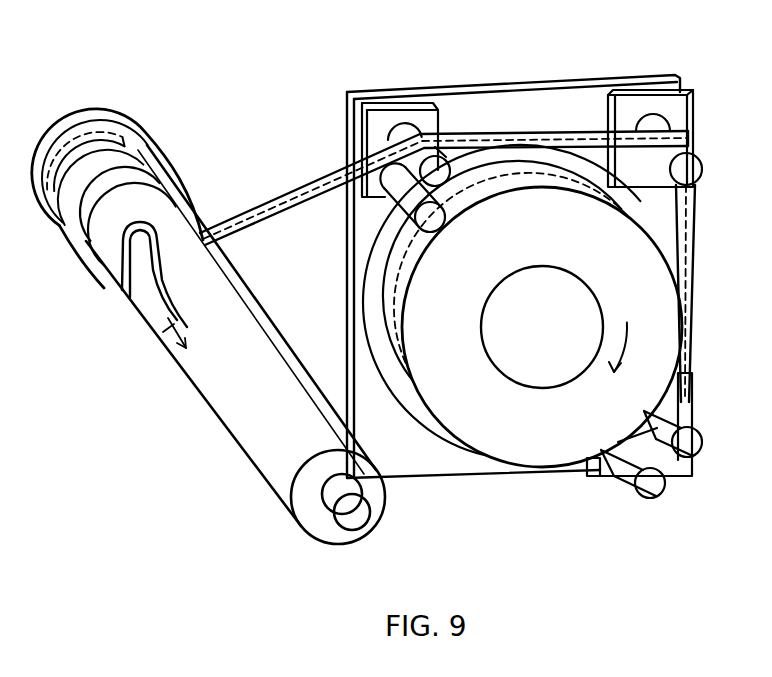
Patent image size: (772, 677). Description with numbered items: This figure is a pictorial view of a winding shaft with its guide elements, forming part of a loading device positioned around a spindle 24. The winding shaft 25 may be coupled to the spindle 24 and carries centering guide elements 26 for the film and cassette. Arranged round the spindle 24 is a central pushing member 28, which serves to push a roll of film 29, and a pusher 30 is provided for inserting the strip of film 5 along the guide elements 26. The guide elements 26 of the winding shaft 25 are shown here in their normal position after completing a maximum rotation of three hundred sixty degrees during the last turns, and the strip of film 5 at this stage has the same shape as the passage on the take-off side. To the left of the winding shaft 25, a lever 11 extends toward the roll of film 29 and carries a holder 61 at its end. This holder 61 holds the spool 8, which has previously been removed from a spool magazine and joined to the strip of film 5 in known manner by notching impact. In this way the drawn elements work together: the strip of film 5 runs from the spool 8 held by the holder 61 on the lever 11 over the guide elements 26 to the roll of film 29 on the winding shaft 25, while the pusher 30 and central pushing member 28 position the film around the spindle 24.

The strip of film 5 is at (262, 213).
The spool 8 is at (110, 122).
The lever 11 is at (230, 408).
The spindle 24 is at (553, 370).
The winding shaft 25 is at (512, 93).
The guide elements 26 is at (402, 195).
The central pushing member 28 is at (380, 308).
The roll of film 29 is at (470, 418).
The pusher 30 is at (418, 112).
The holder 61 is at (88, 265).